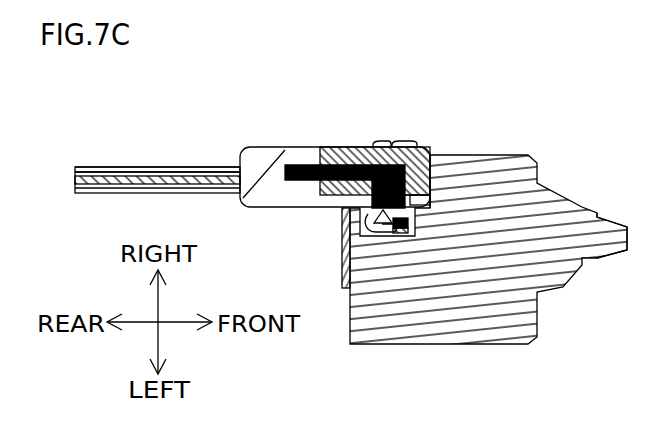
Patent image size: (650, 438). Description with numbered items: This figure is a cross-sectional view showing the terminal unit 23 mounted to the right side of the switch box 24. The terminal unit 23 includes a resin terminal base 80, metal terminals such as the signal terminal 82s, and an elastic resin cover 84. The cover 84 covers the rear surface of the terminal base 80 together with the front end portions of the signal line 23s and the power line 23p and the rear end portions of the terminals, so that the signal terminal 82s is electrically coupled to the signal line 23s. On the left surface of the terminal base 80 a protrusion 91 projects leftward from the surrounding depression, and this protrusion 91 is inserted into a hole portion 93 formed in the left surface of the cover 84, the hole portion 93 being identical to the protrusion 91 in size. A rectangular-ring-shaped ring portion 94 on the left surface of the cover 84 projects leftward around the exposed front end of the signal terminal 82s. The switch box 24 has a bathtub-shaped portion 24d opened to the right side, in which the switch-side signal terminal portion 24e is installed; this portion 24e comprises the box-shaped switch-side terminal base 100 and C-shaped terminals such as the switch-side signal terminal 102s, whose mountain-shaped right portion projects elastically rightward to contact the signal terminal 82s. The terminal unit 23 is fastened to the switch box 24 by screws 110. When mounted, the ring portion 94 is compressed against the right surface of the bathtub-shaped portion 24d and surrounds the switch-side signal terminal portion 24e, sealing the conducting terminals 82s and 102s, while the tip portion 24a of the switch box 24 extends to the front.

The terminal unit 23 is at (157, 119).
The power line 23p is at (108, 167).
The signal line 23s is at (176, 177).
The cover 84 is at (262, 150).
The terminal base 80 is at (345, 147).
The signal terminal 82s is at (306, 165).
The screw 110 is at (408, 141).
The protrusion 91 is at (410, 200).
The hole portion 93 is at (430, 203).
The ring portion 94 is at (372, 224).
The switch box 24 is at (512, 160).
The holder tip portion 24a is at (617, 232).
The bathtub-shaped portion 24d is at (345, 225).
The switch-side signal terminal portion 24e is at (433, 213).
The switch-side terminal base 100 is at (392, 228).
The switch-side signal terminal 102s is at (394, 228).